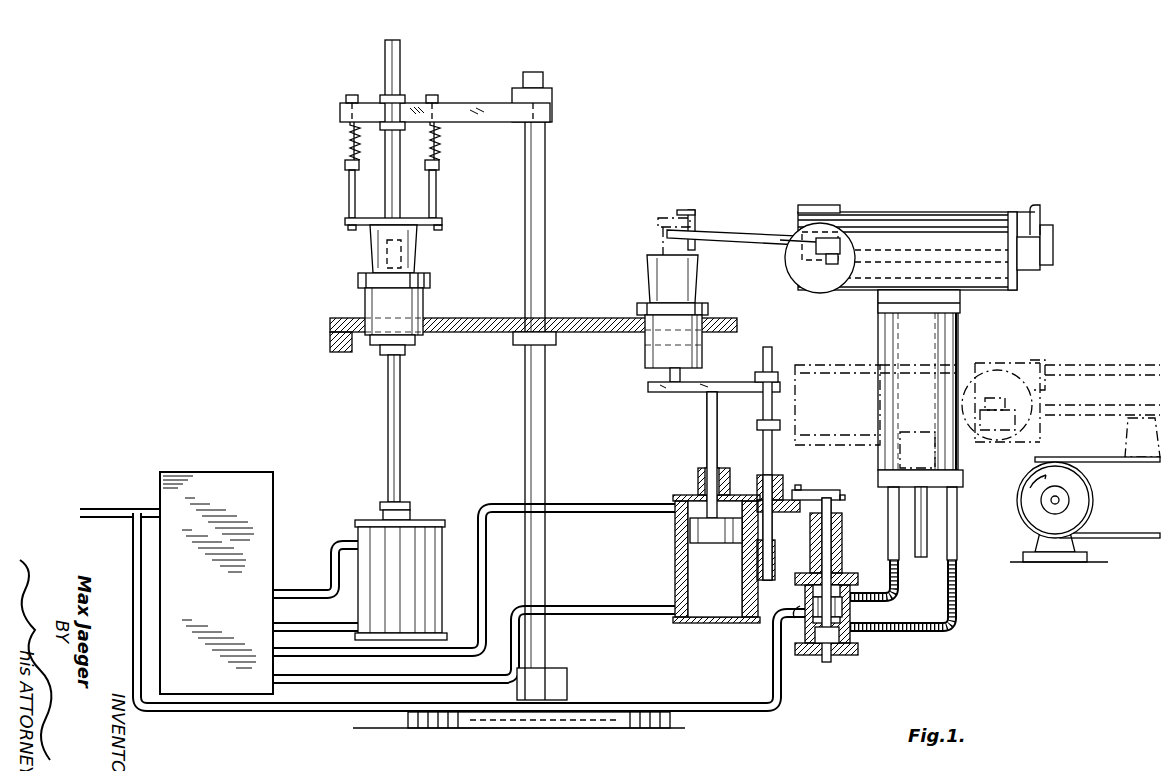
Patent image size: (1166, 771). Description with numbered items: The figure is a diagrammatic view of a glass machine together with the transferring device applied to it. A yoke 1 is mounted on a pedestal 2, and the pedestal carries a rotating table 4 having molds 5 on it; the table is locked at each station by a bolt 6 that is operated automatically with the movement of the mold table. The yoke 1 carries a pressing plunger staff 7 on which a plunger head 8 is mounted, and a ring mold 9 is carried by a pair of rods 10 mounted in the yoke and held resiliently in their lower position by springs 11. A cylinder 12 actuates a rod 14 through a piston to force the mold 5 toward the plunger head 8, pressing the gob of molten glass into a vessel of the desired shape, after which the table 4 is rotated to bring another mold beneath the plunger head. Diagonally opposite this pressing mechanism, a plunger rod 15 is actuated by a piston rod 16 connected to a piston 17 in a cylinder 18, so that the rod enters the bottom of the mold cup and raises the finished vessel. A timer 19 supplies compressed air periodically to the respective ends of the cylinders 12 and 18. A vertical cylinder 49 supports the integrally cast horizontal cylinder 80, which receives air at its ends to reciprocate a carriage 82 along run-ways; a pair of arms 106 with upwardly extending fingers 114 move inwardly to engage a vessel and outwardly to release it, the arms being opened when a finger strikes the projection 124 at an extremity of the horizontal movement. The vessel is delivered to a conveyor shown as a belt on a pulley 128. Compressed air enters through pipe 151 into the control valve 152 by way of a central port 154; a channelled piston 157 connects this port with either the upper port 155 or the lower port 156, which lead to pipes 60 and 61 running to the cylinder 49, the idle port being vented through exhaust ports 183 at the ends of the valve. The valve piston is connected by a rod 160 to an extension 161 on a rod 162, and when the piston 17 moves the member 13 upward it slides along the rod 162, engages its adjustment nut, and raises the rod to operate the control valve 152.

The yoke 1 is at (470, 103).
The pedestal 2 is at (545, 205).
The rotating table 4 is at (580, 318).
The mold 5 is at (423, 272).
The bolt 6 is at (330, 341).
The pressing plunger staff 7 is at (398, 183).
The plunger head 8 is at (402, 247).
The ring mold 9 is at (362, 226).
The rods 10 is at (437, 186).
The springs 11 is at (346, 150).
The cylinder 12 is at (442, 532).
The member 13 is at (690, 392).
The rod 14 is at (400, 397).
The plunger rod 15 is at (680, 378).
The piston rod 16 is at (705, 440).
The piston 17 is at (700, 530).
The cylinder 18 is at (677, 572).
The timer 19 is at (274, 485).
The cylinder 49 is at (930, 357).
The pipe 60 is at (958, 528).
The pipe 61 is at (885, 495).
The horizontal cylinder 80 is at (930, 240).
The carriage 82 is at (826, 212).
The arms 106 is at (732, 231).
The fingers 114 is at (697, 210).
The projection 124 is at (1132, 462).
The pulley 128 is at (1085, 510).
The pipe 151 is at (705, 700).
The control valve 152 is at (862, 608).
The central port 154 is at (798, 612).
The port 155 is at (888, 634).
The port 156 is at (855, 585).
The piston 157 is at (846, 555).
The rod 160 is at (812, 494).
The extension 161 is at (808, 472).
The rod 162 is at (778, 446).
The exhaust ports 183 is at (818, 560).